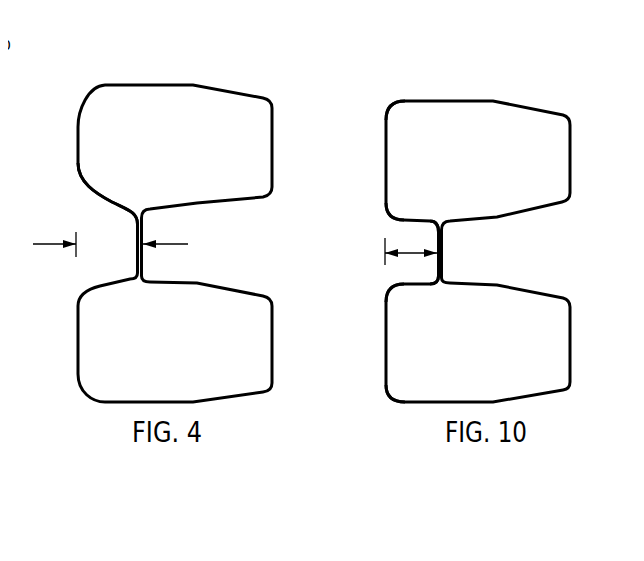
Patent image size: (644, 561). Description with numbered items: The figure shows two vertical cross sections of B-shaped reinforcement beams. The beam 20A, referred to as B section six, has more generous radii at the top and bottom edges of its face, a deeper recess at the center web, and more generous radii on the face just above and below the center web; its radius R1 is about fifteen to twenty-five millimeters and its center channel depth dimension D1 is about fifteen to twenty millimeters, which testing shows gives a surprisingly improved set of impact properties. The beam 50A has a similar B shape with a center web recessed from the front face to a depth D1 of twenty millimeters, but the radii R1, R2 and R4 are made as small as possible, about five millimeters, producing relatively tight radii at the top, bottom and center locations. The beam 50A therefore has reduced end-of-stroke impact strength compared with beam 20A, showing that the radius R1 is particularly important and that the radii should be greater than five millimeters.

In FIG. 4, the B section 6 beam 20A is at (231, 77).
In FIG. 10, the B section beam 50A is at (509, 91).
In FIG. 4, the radius R1 is at (133, 153).
In FIG. 10, the radius R1 is at (387, 215).
In FIG. 10, the radius R2 is at (437, 225).
In FIG. 10, the radius R4 is at (390, 105).
In FIG. 4, the dimension D1 is at (33, 245).
In FIG. 10, the dimension D1 is at (413, 251).